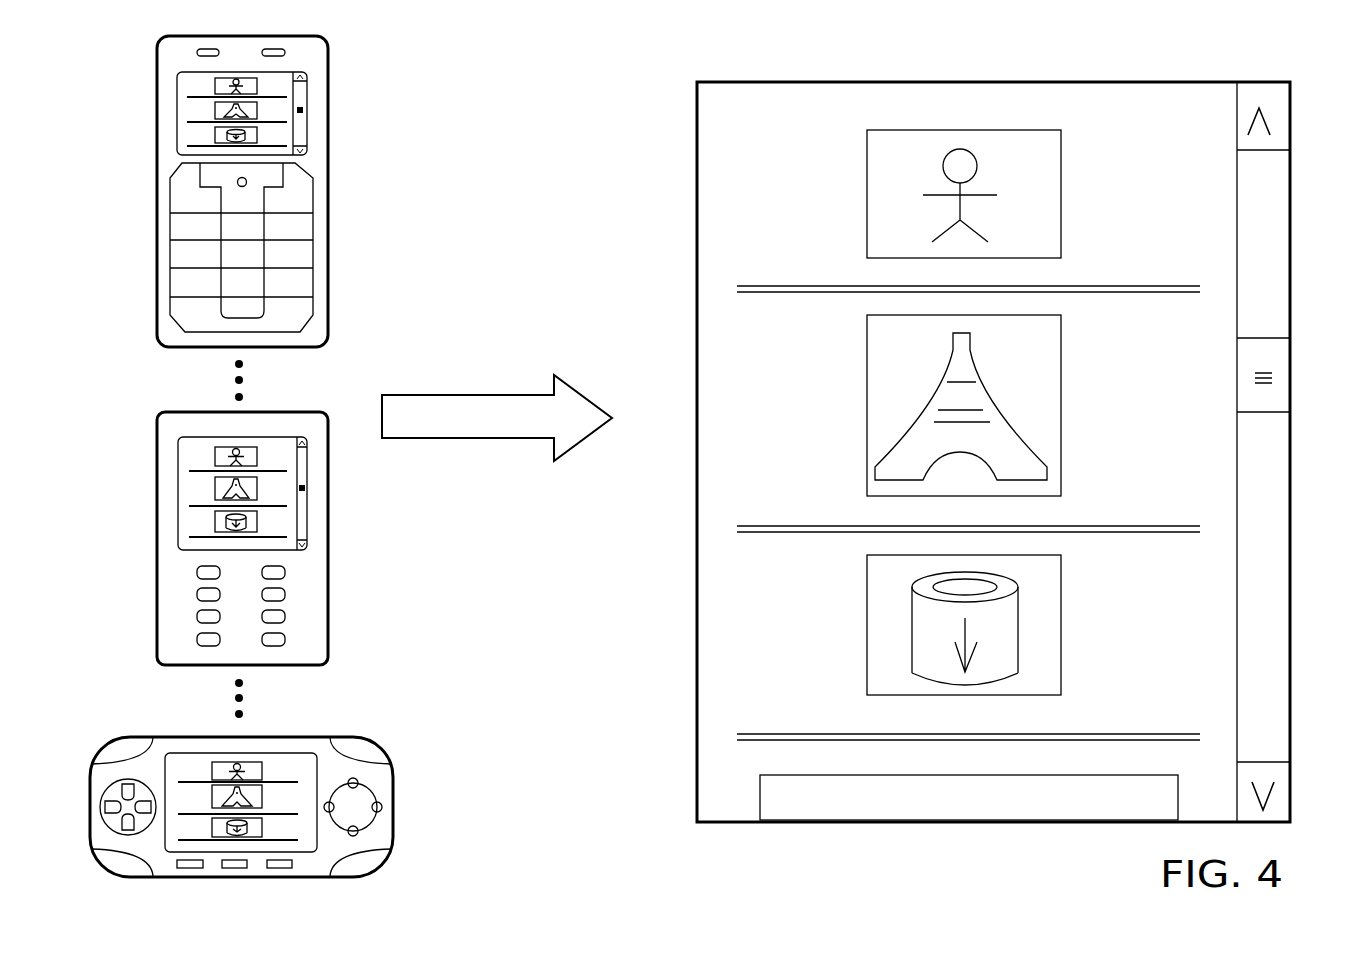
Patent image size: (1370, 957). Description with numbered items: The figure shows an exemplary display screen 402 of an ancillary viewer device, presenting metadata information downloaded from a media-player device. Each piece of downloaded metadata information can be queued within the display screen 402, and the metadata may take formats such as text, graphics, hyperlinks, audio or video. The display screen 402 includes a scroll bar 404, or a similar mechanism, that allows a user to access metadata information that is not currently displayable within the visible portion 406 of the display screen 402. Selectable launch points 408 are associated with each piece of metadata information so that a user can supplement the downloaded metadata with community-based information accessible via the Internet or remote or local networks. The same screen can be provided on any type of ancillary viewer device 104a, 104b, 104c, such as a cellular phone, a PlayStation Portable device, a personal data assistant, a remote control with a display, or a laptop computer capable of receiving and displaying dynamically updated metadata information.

The ancillary viewer device 104a is at (328, 300).
The ancillary viewer device 104b is at (328, 642).
The ancillary viewer device 104c is at (392, 775).
The display screen 402 is at (305, 123).
The scroll bar 404 is at (1267, 358).
The visible portion 406 is at (783, 118).
The selectable launch points 408 is at (824, 235).